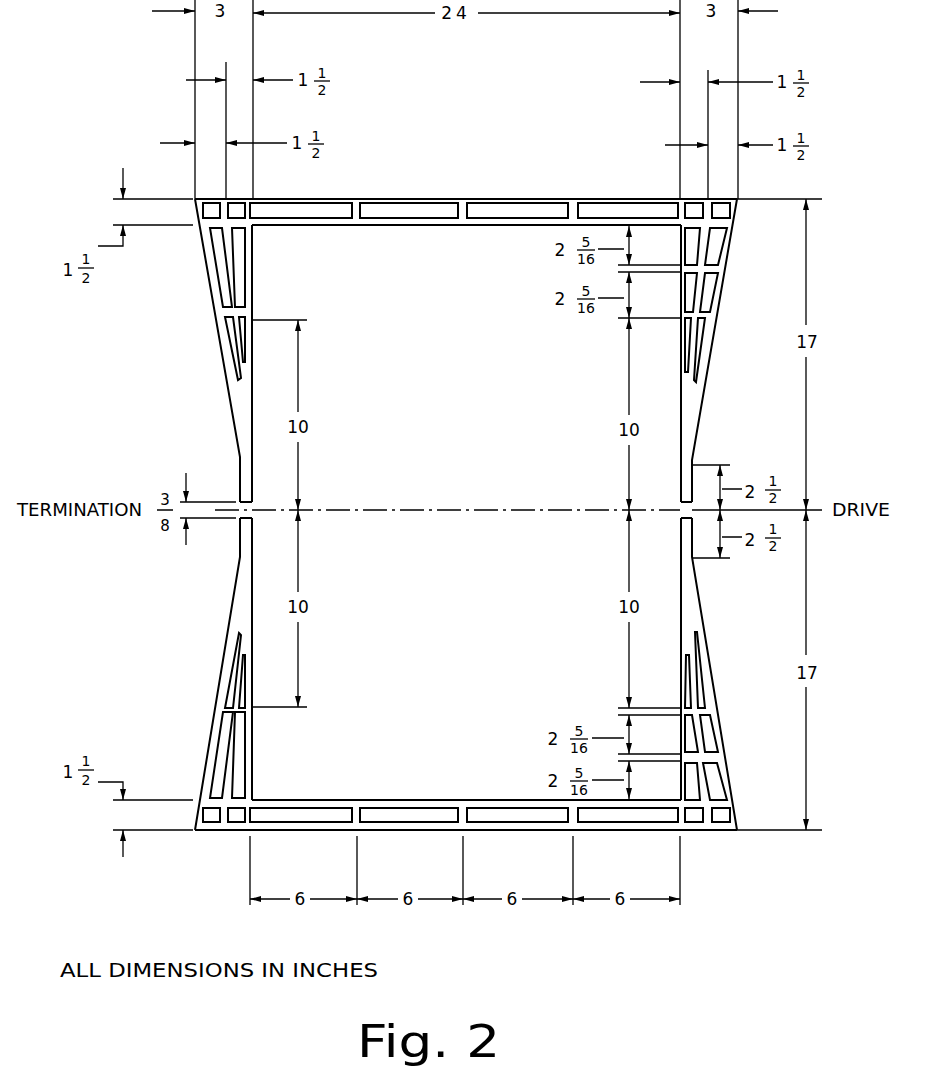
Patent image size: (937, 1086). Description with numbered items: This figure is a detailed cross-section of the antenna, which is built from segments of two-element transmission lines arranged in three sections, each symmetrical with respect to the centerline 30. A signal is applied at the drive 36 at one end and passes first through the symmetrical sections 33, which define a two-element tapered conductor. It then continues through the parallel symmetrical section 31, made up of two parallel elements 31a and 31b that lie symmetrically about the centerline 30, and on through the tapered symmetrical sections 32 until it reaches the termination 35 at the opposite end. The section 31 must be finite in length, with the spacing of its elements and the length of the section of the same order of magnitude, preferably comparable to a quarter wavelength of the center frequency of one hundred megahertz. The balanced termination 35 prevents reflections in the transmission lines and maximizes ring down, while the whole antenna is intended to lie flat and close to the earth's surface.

The centerline 30 is at (353, 510).
The parallel symmetrical section 31 is at (466, 514).
The parallel element 31a is at (343, 227).
The parallel element 31b is at (282, 798).
The tapered symmetrical section 32 is at (350, 397).
The symmetrical section 33 is at (575, 417).
The termination 35 is at (262, 513).
The drive 36 is at (675, 517).